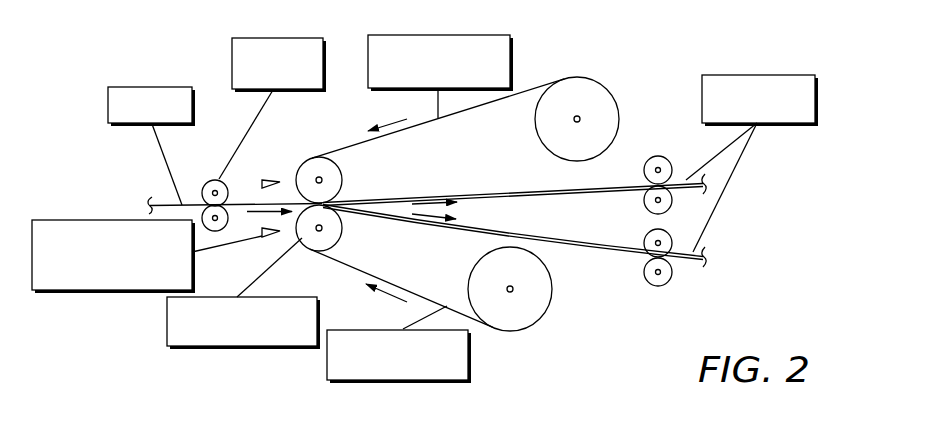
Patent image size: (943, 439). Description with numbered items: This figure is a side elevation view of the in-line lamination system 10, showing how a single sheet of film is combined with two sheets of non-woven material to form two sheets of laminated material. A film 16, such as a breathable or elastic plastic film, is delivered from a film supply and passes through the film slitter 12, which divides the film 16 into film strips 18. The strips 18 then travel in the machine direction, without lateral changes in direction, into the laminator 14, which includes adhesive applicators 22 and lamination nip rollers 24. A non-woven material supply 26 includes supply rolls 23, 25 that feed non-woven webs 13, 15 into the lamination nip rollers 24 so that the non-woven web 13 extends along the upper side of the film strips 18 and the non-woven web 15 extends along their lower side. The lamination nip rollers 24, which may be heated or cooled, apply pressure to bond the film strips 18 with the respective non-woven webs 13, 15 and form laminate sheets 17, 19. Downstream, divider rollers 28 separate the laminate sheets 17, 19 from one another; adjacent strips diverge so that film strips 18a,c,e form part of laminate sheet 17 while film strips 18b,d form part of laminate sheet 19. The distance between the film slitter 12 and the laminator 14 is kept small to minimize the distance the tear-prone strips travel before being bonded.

The in-line lamination system 10 is at (130, 57).
The film slitter 12 is at (274, 37).
The non-woven web 13 is at (411, 34).
The laminator 14 is at (325, 133).
The non-woven web 15 is at (372, 329).
The film 16 is at (180, 86).
The laminate sheet 17 is at (528, 186).
The film strips 18 is at (257, 201).
The film strips 18a,c,e is at (486, 201).
The film strips 18b,d is at (497, 228).
The laminate sheet 19 is at (593, 245).
The adhesive applicators 22 is at (63, 218).
The supply roll 23 is at (585, 75).
The lamination nip rollers 24 is at (220, 296).
The supply roll 25 is at (556, 297).
The non-woven material supply 26 is at (625, 66).
The divider rollers 28 is at (653, 153).